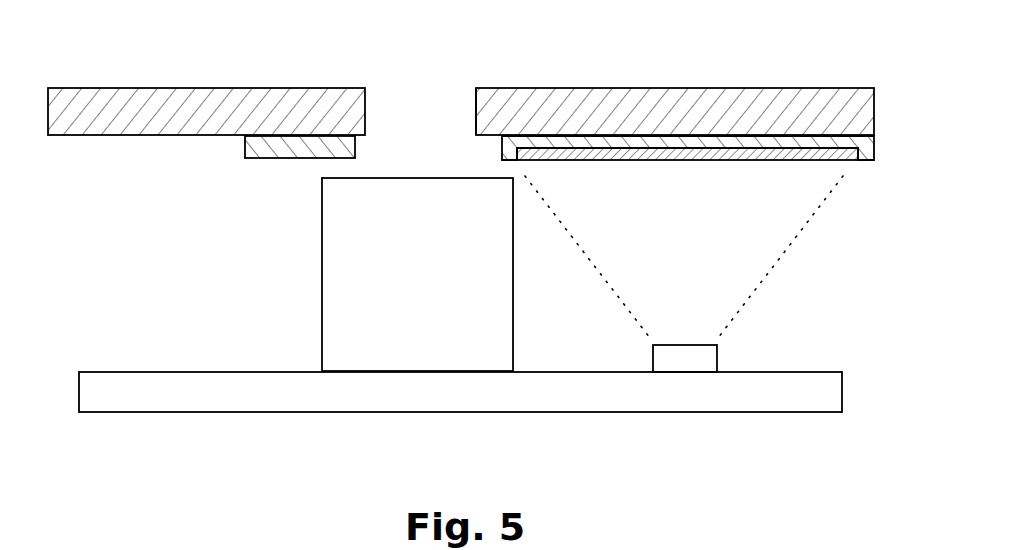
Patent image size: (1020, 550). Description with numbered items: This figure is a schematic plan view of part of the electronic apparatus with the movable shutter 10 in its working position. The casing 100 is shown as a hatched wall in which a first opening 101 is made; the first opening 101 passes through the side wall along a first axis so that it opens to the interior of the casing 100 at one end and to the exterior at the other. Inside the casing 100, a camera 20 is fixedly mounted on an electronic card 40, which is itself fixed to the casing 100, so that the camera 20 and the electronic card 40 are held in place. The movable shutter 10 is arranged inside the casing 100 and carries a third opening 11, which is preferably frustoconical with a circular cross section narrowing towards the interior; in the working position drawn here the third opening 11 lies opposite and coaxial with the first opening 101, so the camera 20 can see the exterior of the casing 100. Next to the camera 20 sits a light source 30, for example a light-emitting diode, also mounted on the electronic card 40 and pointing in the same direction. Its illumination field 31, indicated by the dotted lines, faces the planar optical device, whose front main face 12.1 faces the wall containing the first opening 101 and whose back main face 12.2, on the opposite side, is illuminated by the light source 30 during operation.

The casing 100 is at (727, 103).
The first opening 101 is at (455, 105).
The third opening 11 is at (394, 147).
The movable shutter 10 is at (260, 153).
The front main face 12.1 is at (650, 161).
The back main face 12.2 is at (733, 161).
The camera 20 is at (347, 293).
The light source 30 is at (710, 362).
The illumination field 31 is at (767, 277).
The electronic card 40 is at (781, 397).